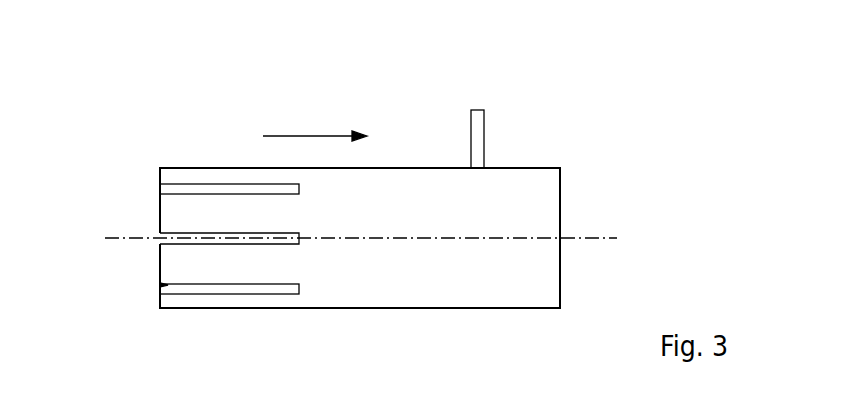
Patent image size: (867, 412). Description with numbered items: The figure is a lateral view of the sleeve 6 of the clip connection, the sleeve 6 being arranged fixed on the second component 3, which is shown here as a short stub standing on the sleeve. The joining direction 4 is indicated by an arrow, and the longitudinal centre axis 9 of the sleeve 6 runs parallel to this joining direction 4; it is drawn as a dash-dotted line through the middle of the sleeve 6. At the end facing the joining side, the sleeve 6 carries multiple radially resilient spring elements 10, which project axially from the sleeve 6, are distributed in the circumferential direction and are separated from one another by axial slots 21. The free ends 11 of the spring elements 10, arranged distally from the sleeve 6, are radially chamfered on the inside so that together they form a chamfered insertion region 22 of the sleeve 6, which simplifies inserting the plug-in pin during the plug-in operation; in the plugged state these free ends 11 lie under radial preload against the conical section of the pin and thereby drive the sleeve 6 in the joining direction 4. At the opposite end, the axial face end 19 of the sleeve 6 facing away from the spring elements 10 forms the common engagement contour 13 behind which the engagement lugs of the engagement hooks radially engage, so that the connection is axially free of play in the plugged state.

The second component 3 is at (477, 110).
The joining direction 4 is at (308, 135).
The sleeve 6 is at (426, 168).
The longitudinal centre axis 9 is at (610, 237).
The spring elements 10 is at (252, 265).
The free ends 11 is at (160, 264).
The engagement contour 13 is at (560, 288).
The axial face end 19 is at (560, 267).
The axial slots 21 is at (215, 240).
The insertion region 22 is at (172, 192).